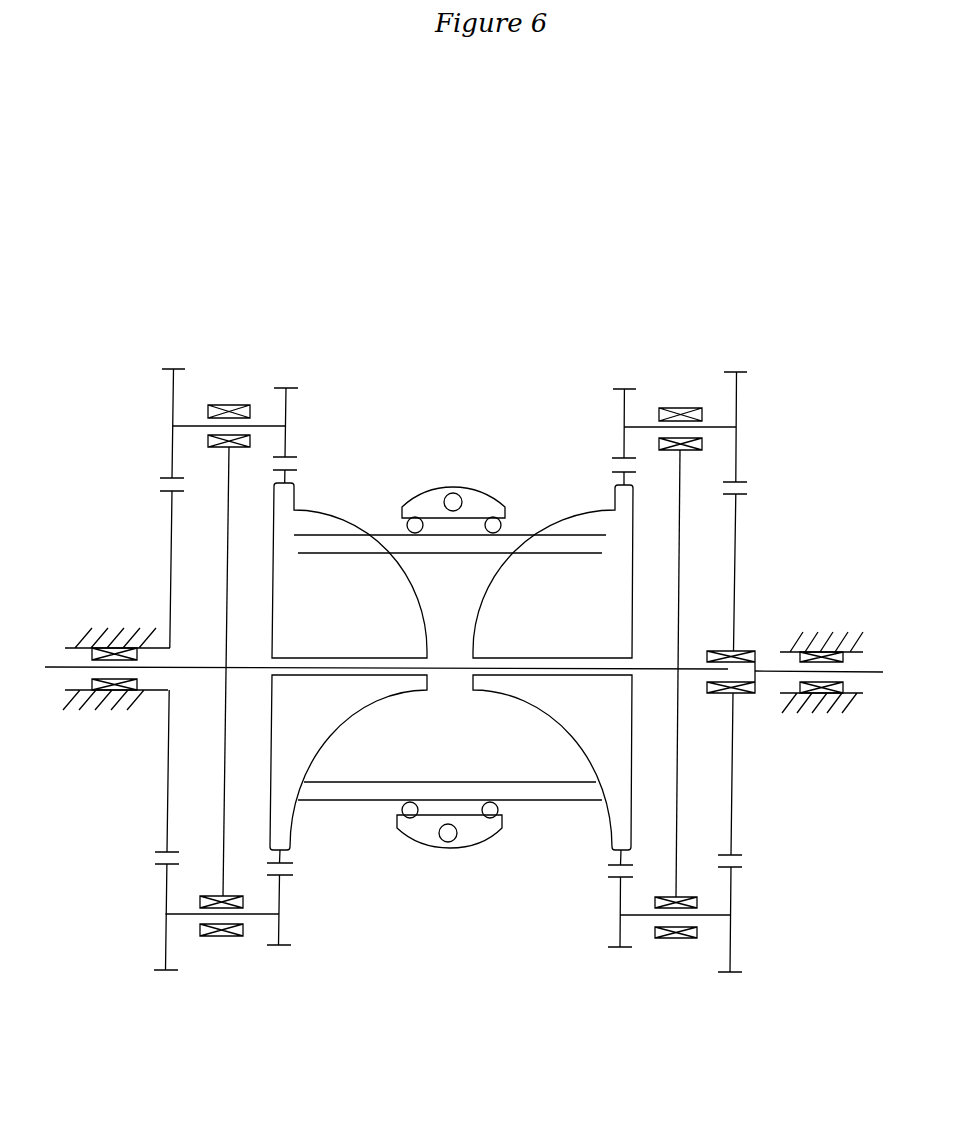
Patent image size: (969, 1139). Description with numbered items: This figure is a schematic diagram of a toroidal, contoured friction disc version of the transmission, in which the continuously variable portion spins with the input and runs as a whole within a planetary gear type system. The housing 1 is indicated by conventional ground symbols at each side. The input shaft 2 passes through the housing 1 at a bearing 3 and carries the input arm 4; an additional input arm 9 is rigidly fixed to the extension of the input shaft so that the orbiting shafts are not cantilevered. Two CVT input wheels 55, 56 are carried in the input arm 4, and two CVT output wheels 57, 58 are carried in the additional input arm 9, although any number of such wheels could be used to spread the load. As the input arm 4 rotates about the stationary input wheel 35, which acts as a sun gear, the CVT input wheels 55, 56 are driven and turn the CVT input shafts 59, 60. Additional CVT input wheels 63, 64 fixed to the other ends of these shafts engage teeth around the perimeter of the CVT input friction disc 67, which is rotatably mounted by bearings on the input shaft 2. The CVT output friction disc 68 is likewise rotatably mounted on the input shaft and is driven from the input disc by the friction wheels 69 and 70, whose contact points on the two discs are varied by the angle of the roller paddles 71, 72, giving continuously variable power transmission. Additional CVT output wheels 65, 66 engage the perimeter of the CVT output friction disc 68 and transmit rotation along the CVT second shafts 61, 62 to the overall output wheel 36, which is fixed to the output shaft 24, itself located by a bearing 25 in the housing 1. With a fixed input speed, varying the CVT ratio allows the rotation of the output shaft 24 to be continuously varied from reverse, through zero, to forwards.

The housing 1 is at (117, 630).
The input shaft 2 is at (55, 665).
The bearing 3 is at (108, 685).
The input arm 4 is at (222, 785).
The additional input arm 9 is at (678, 804).
The output shaft 24 is at (878, 673).
The bearing 25 is at (822, 688).
The stationary input wheel 35 is at (172, 524).
The overall output wheel 36 is at (738, 563).
The CVT input wheel 55 is at (172, 411).
The CVT input wheel 56 is at (165, 898).
The CVT output wheel 57 is at (733, 897).
The CVT output wheel 58 is at (738, 411).
The CVT input shaft 59 is at (192, 425).
The CVT input shaft 60 is at (180, 915).
The CVT second shaft 61 is at (713, 920).
The CVT second shaft 62 is at (717, 425).
The additional CVT input wheel 63 is at (287, 412).
The additional CVT input wheel 64 is at (280, 930).
The additional CVT output wheel 65 is at (617, 925).
The additional CVT output wheel 66 is at (623, 405).
The CVT input friction disc 67 is at (292, 513).
The CVT output friction disc 68 is at (625, 527).
The friction wheel 69 is at (352, 547).
The friction wheel 70 is at (332, 792).
The roller paddle 71 is at (432, 500).
The roller paddle 72 is at (475, 832).